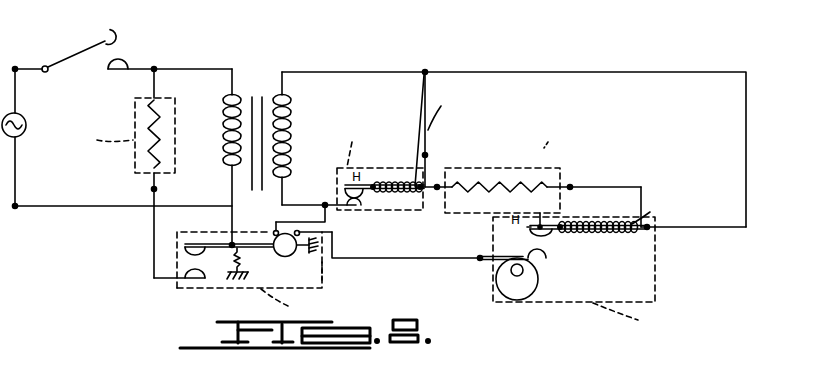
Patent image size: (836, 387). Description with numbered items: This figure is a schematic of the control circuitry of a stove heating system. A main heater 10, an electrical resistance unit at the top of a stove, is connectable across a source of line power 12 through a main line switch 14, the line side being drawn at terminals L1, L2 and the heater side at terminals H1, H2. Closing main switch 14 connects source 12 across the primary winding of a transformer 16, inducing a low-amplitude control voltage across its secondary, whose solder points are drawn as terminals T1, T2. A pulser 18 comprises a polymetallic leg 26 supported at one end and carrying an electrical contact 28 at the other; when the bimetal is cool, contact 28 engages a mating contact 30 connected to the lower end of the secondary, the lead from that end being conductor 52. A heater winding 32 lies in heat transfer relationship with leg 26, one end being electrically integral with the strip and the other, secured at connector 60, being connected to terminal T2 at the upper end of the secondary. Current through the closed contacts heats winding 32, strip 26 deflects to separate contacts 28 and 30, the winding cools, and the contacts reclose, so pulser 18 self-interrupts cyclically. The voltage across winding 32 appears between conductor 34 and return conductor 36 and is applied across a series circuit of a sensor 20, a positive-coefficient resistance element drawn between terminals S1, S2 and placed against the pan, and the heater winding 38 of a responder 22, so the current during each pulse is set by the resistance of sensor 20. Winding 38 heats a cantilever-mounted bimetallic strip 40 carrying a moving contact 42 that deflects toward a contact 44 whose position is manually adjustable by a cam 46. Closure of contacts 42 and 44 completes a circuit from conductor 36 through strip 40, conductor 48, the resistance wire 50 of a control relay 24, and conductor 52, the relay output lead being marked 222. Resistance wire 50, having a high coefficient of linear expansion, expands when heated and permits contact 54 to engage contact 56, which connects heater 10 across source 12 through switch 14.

The line terminal L1 is at (16, 67).
The line terminal L2 is at (17, 208).
The main line switch 14 is at (101, 40).
The source of line power 12 is at (25, 117).
The main heater 10 is at (150, 150).
The heater terminal H1 is at (155, 68).
The heater terminal H2 is at (152, 189).
The transformer 16 is at (250, 82).
The return conductor 36 is at (446, 70).
The transformer secondary terminal T1 is at (323, 203).
The terminal T2 is at (424, 70).
The pulser 18 is at (357, 167).
The polymetallic leg 26 is at (367, 184).
The electrical contact 28 is at (347, 183).
The mating contact 30 is at (345, 208).
The heater winding 32 is at (400, 195).
The conductor 34 is at (430, 185).
The connector 60 is at (426, 154).
The conductor 52 is at (300, 207).
The sensor 20 is at (518, 167).
The sensor terminal S1 is at (437, 189).
The sensor terminal S2 is at (572, 186).
The responder 22 is at (655, 244).
The heater winding 38 is at (622, 223).
The bimetallic strip 40 is at (548, 233).
The moving contact 42 is at (527, 228).
The contact 44 is at (546, 259).
The cam 46 is at (498, 282).
The conductor 48 is at (405, 259).
The relay output lead 222 is at (346, 274).
The resistance wire 50 is at (273, 243).
The contact 54 is at (185, 252).
The contact 56 is at (156, 270).
The control relay 24 is at (200, 290).